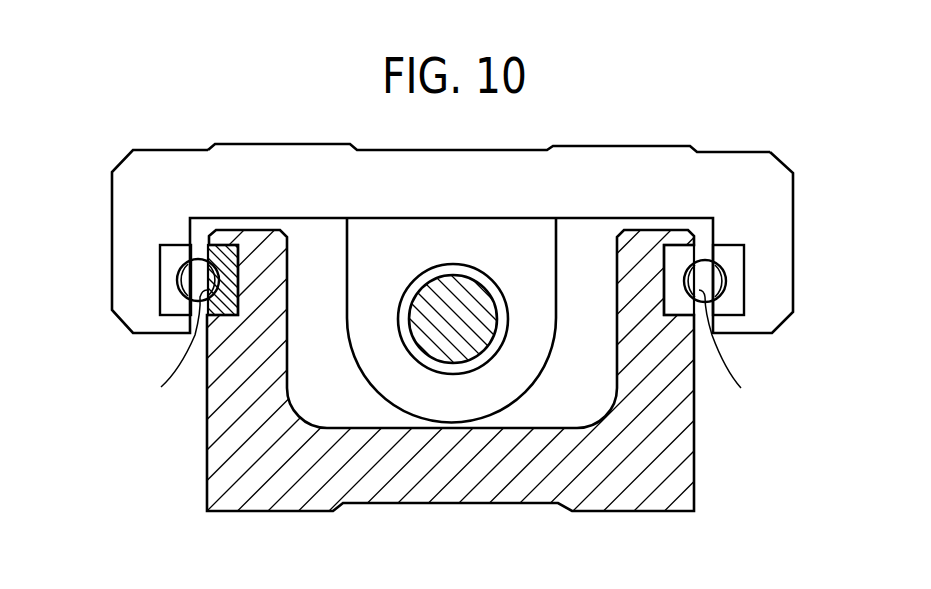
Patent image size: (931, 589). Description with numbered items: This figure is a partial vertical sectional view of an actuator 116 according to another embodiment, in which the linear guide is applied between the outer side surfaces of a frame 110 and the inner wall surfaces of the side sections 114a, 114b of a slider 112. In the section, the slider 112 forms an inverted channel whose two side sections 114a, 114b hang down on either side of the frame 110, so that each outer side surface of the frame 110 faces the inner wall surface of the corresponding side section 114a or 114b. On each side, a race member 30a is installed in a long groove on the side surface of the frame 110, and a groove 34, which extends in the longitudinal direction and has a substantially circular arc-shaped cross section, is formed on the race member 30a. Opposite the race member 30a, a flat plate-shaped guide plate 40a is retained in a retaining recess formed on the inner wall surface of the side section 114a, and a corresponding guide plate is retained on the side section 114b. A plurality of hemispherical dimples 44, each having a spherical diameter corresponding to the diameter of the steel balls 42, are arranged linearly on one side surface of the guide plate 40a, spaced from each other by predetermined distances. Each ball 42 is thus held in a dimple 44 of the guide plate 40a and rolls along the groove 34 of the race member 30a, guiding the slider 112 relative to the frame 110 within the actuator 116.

The actuator 116 is at (740, 52).
The slider 112 is at (618, 146).
The side section of slider 114a is at (138, 217).
The side section of slider 114b is at (760, 219).
The frame 110 is at (400, 509).
The groove 34 is at (247, 297).
The race member 30a is at (223, 247).
The guide plate 40a is at (165, 258).
The hemispherical dimple 44 is at (178, 292).
The ball 42 is at (453, 354).